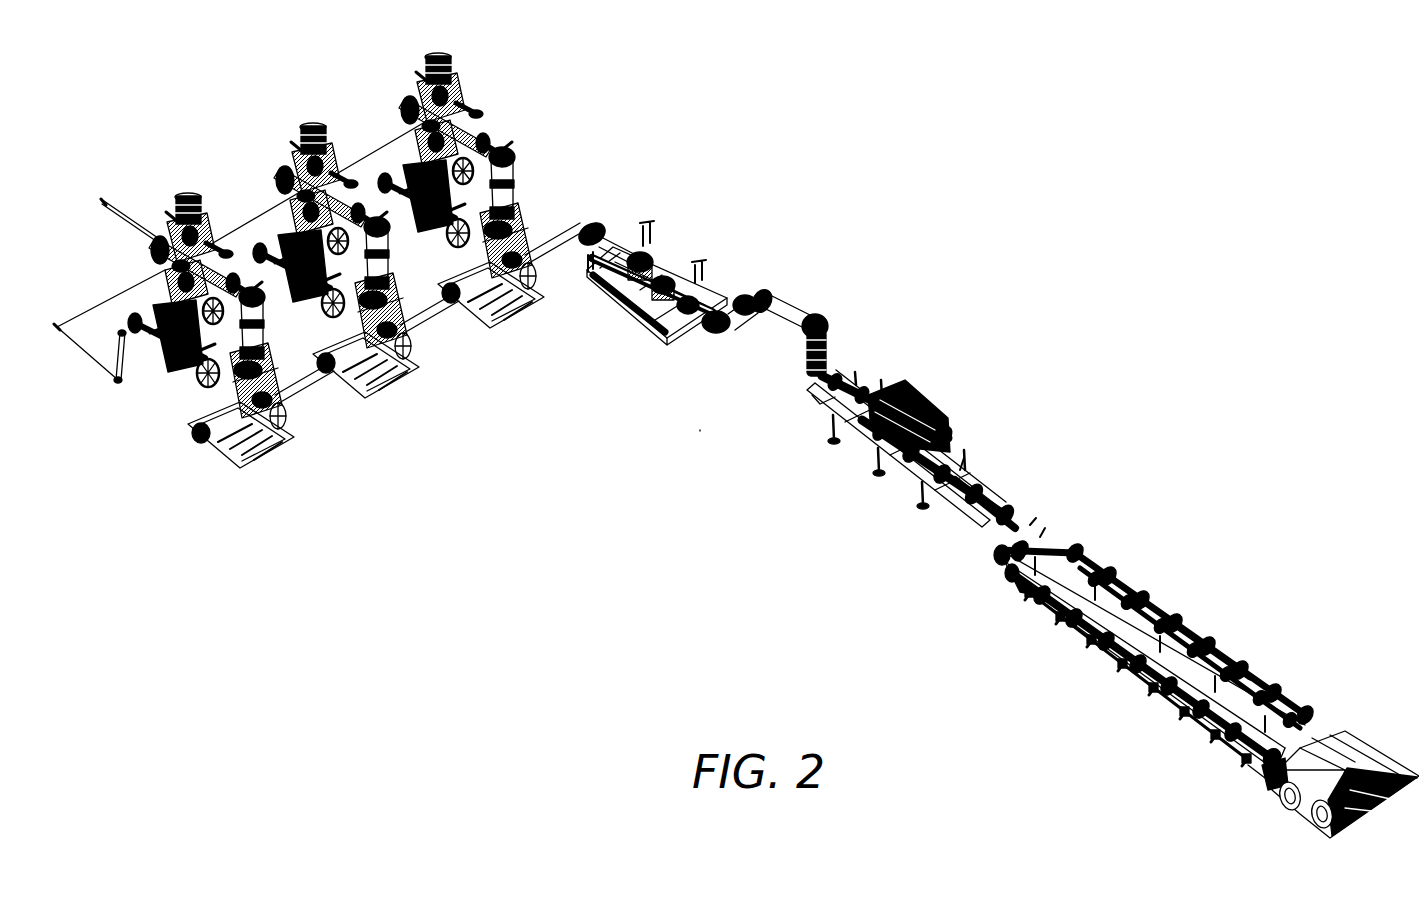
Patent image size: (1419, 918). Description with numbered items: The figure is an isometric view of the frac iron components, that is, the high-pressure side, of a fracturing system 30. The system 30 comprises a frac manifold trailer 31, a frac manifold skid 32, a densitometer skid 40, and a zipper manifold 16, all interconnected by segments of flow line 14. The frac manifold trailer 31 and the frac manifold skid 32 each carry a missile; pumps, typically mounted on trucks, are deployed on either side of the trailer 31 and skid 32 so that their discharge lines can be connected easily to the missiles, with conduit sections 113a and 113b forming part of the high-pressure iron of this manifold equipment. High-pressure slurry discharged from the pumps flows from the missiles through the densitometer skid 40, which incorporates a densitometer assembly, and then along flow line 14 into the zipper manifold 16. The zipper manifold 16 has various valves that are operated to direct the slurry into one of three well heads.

The zipper manifold 16 is at (518, 162).
The densitometer skid 40 is at (672, 247).
The flow line 14 is at (792, 305).
The frac manifold skid 32 is at (930, 399).
The conduit section 113b is at (978, 475).
The frac manifold trailer 31 is at (1155, 593).
The conduit section 113a is at (1213, 655).
The fracturing system 30 is at (699, 431).